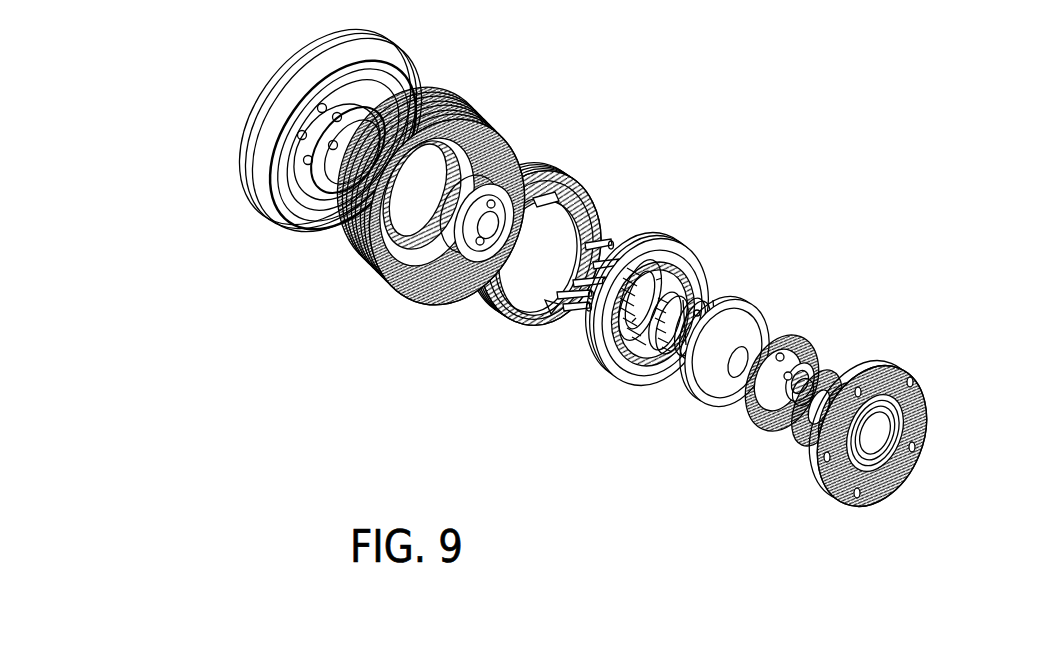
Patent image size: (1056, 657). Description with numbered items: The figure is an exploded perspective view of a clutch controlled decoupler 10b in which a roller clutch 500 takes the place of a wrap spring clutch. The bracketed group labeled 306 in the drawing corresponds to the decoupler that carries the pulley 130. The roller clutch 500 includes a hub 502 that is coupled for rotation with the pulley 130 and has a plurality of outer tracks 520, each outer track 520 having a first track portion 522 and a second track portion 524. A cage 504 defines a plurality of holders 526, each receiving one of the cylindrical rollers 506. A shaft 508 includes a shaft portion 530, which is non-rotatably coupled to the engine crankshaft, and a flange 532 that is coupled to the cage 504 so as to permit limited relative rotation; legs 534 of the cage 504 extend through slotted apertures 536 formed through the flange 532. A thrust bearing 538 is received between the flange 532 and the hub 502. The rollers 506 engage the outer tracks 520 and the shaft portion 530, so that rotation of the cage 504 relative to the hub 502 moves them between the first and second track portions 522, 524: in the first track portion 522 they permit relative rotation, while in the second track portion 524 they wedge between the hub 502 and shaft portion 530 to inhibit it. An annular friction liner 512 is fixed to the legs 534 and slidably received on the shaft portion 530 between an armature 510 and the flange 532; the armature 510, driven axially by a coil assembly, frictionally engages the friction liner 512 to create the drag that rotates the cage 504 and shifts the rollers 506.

The clutch controlled decoupler 10b is at (841, 611).
The brake assembly 306 is at (506, 389).
The pulley 130 is at (477, 97).
The roller clutch 500 is at (921, 336).
The hub 502 is at (597, 378).
The holders 526 is at (657, 337).
The outer tracks 520 is at (871, 92).
The first track portion 522 is at (658, 282).
The second track portion 524 is at (696, 300).
The legs 534 is at (700, 307).
The cage 504 is at (718, 298).
The thrust bearing 538 is at (715, 400).
The flange 532 is at (750, 420).
The slotted apertures 536 is at (780, 353).
The shaft portion 530 is at (790, 373).
The shaft 508 is at (767, 420).
The friction liner 512 is at (832, 377).
The armature 510 is at (851, 387).
The cylindrical rollers 506 is at (927, 397).